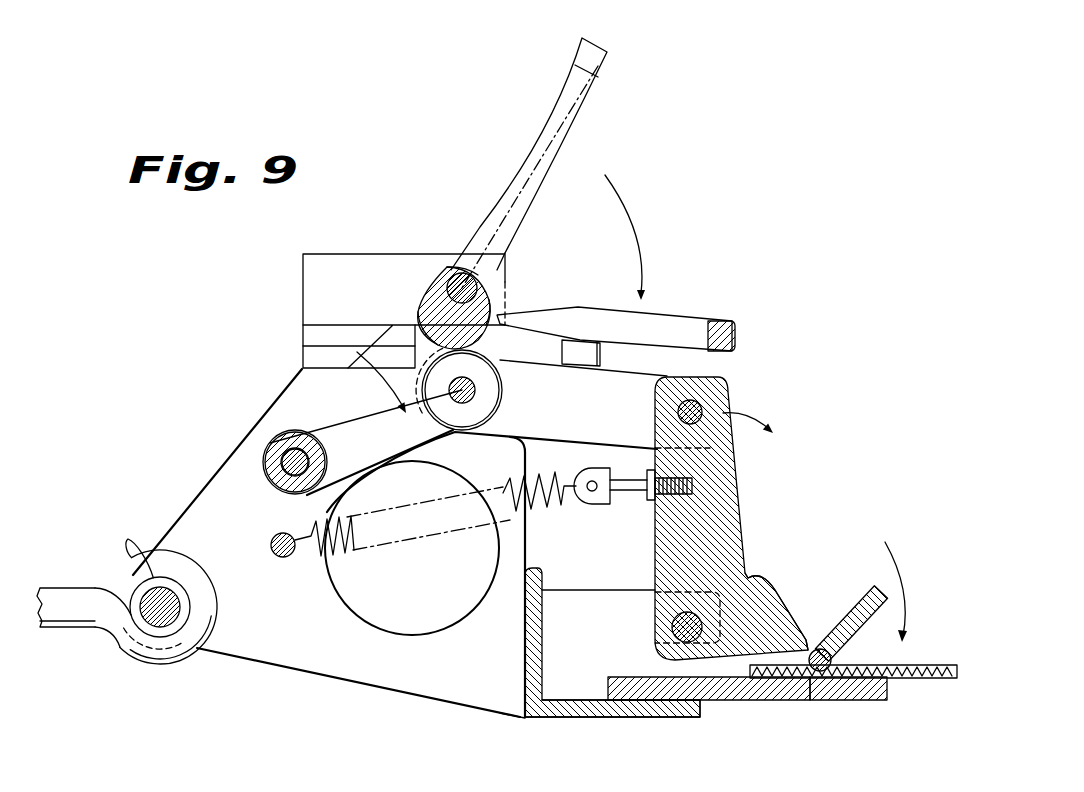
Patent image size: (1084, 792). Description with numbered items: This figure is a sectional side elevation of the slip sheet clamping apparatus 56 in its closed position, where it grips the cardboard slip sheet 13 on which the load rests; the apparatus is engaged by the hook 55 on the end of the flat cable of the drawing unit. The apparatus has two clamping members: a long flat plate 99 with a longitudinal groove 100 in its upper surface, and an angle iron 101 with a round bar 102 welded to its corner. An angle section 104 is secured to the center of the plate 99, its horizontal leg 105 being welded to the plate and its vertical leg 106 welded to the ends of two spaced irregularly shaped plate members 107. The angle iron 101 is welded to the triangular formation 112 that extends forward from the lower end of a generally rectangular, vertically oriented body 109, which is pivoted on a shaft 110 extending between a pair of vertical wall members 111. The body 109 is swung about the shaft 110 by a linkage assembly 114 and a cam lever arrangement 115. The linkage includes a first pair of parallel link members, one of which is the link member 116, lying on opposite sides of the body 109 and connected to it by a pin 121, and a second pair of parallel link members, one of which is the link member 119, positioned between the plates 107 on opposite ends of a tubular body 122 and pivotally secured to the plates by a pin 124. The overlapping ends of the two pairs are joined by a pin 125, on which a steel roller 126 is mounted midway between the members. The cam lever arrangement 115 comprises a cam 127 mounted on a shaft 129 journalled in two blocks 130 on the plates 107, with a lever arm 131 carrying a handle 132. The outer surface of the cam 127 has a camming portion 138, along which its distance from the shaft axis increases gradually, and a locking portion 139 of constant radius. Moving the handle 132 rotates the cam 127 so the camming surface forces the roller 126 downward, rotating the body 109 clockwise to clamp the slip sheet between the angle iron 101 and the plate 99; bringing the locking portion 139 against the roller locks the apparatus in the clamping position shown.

The cardboard slip sheet 13 is at (920, 667).
The hook 55 is at (140, 655).
The slip sheet clamping apparatus 56 is at (690, 201).
The flat plate 99 is at (718, 700).
The longitudinal groove 100 is at (800, 700).
The angle iron 101 is at (867, 593).
The round bar 102 is at (848, 672).
The angle section 104 is at (520, 718).
The horizontal leg 105 is at (562, 720).
The vertical leg 106 is at (523, 630).
The plate members 107 is at (258, 655).
The body 109 is at (725, 503).
The shaft 110 is at (700, 612).
The vertical wall members 111 is at (578, 600).
The triangular formation 112 is at (755, 620).
The linkage assembly 114 is at (656, 364).
The cam lever arrangement 115 is at (515, 258).
The link member 116 is at (583, 426).
The link member 119 is at (333, 430).
The pin 121 is at (697, 405).
The tubular body 122 is at (272, 442).
The pin 124 is at (287, 460).
The pin 125 is at (415, 330).
The steel roller 126 is at (485, 378).
The cam 127 is at (423, 307).
The shaft 129 is at (452, 262).
The blocks 130 is at (303, 278).
The lever arm 131 is at (697, 330).
The handle 132 is at (600, 62).
The camming portion 138 is at (448, 270).
The locking portion 139 is at (490, 317).